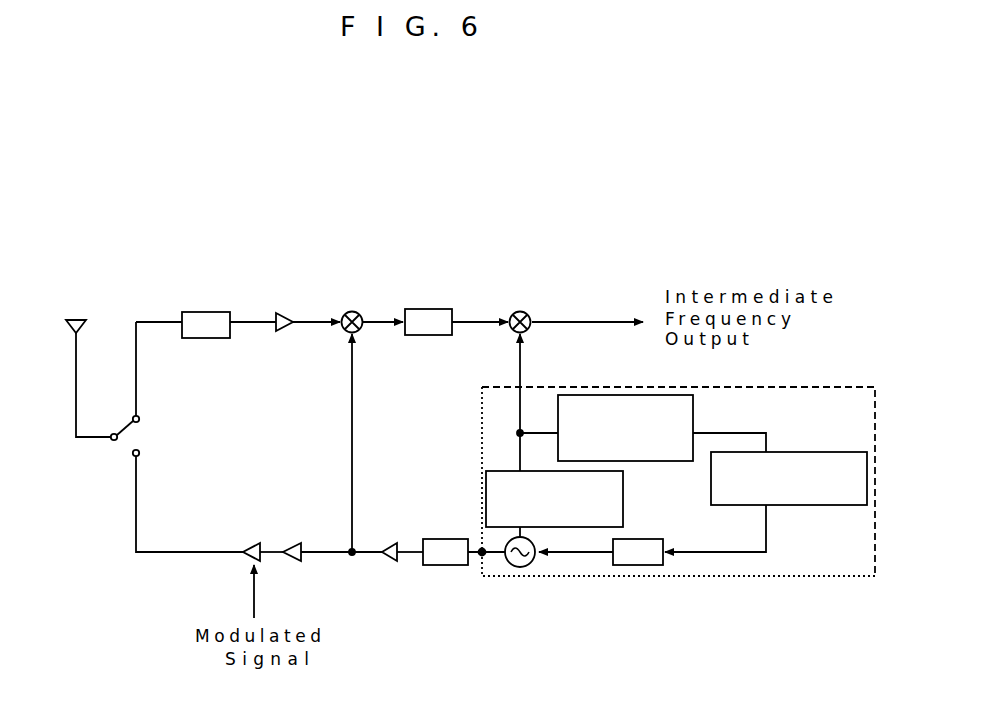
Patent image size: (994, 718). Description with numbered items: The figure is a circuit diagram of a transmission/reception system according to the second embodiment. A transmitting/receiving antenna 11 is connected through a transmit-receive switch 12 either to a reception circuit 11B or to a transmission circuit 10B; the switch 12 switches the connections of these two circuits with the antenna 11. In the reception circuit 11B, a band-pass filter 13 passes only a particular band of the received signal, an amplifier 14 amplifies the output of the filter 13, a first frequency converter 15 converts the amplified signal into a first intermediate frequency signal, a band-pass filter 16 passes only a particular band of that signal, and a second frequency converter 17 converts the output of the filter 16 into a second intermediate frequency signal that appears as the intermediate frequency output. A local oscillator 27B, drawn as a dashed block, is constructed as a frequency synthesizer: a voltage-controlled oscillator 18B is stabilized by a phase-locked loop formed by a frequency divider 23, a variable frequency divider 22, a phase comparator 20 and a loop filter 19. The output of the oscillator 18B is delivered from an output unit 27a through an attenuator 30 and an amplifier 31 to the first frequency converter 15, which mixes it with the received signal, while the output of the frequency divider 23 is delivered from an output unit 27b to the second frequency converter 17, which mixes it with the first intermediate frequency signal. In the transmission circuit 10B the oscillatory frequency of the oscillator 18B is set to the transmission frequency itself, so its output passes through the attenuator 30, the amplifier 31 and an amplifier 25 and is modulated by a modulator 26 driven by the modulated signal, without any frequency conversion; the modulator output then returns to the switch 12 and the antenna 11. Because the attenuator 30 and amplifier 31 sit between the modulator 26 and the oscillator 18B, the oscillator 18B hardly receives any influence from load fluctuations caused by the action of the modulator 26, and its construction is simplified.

The transmission circuit 10B is at (158, 604).
The transmitting/receiving antenna 11 is at (67, 339).
The reception circuit 11B is at (188, 259).
The transmit-receive switch 12 is at (139, 436).
The band-pass filter 13 is at (202, 311).
The amplifier 14 is at (274, 314).
The first frequency converter 15 is at (346, 314).
The band-pass filter 16 is at (404, 309).
The second frequency converter 17 is at (512, 314).
The voltage-controlled oscillator 18B is at (530, 565).
The loop filter 19 is at (668, 548).
The phase comparator 20 is at (818, 458).
The variable frequency divider 22 is at (621, 395).
The frequency divider 23 is at (503, 471).
The amplifier 25 is at (296, 562).
The modulator 26 is at (258, 562).
The output unit 27a is at (480, 550).
The output unit 27b is at (521, 432).
The local oscillator 27B is at (785, 578).
The attenuator 30 is at (450, 566).
The amplifier 31 is at (392, 563).